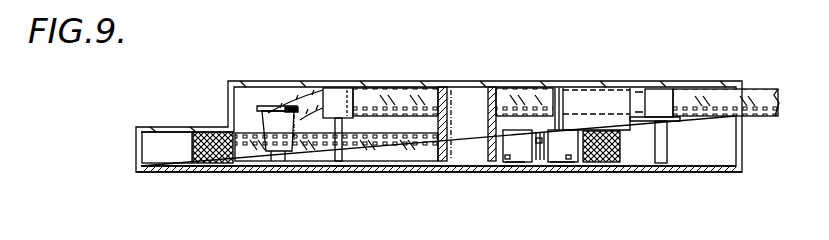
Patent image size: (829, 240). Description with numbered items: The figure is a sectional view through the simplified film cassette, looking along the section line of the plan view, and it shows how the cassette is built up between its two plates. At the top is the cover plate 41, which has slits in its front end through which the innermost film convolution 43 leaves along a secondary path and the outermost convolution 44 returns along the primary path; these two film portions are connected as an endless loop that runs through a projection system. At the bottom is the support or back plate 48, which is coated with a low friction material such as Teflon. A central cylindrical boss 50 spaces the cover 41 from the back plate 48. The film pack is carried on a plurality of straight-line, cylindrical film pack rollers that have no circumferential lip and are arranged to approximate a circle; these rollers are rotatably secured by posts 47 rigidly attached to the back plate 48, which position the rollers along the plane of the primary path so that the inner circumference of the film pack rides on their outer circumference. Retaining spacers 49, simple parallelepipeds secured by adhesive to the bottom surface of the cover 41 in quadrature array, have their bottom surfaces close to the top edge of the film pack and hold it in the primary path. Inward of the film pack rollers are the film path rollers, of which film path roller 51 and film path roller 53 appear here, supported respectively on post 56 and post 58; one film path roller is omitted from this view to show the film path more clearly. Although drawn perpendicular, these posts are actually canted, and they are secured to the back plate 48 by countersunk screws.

The cover plate 41 is at (243, 83).
The innermost film convolution 43 is at (517, 100).
The outermost film convolution 44 is at (620, 150).
The posts 47 is at (560, 164).
The back plate 48 is at (701, 172).
The retaining spacers 49 is at (597, 105).
The central cylindrical boss 50 is at (451, 97).
The film path roller 51 is at (339, 95).
The film path roller 53 is at (300, 153).
The post 56 is at (354, 153).
The post 58 is at (264, 152).